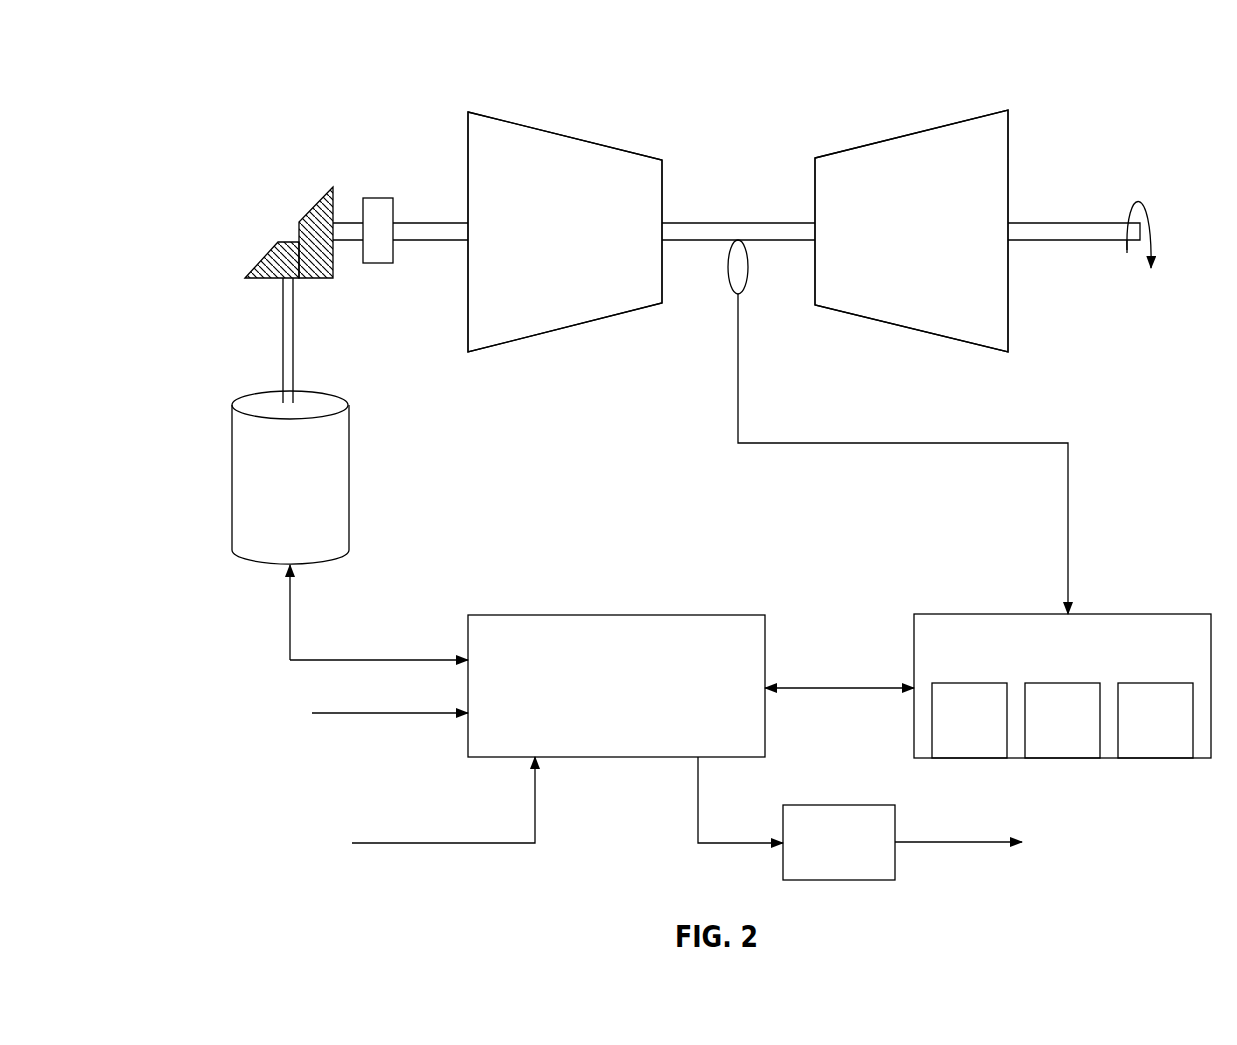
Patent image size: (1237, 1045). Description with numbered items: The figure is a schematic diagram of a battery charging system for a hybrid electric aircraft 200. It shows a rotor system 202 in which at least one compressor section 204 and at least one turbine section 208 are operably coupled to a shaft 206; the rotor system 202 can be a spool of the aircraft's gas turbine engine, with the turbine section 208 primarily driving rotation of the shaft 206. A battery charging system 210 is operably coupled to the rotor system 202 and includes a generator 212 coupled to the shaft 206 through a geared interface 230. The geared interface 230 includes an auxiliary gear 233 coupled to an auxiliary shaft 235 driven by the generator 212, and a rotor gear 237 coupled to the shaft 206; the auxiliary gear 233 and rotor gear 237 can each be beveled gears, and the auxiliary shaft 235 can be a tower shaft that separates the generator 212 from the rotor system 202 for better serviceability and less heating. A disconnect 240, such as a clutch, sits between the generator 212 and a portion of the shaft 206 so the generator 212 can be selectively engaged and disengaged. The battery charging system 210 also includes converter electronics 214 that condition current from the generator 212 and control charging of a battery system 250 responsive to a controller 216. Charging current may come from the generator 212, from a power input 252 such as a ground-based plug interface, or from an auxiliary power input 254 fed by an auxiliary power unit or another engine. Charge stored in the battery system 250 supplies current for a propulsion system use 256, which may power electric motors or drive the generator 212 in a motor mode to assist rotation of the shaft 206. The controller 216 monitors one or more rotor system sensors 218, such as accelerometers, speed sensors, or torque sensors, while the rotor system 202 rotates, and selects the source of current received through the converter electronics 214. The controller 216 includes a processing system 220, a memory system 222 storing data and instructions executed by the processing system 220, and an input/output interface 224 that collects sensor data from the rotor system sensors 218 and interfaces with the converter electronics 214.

The hybrid electric aircraft 200 is at (295, 68).
The rotor system 202 is at (805, 105).
The compressor section 204 is at (565, 135).
The shaft 206 is at (440, 223).
The turbine section 208 is at (912, 133).
The battery charging system 210 is at (227, 582).
The generator 212 is at (232, 478).
The converter electronics 214 is at (640, 700).
The controller 216 is at (1085, 663).
The rotor system sensors 218 is at (735, 292).
The processing system 220 is at (948, 734).
The memory system 222 is at (1040, 734).
The input/output interface 224 is at (1133, 734).
The geared interface 230 is at (225, 200).
The auxiliary gear 233 is at (270, 260).
The auxiliary shaft 235 is at (283, 342).
The rotor gear 237 is at (322, 207).
The disconnect 240 is at (378, 265).
The battery system 250 is at (817, 856).
The power input 252 is at (412, 845).
The auxiliary power input 254 is at (365, 715).
The propulsion system use 256 is at (960, 845).